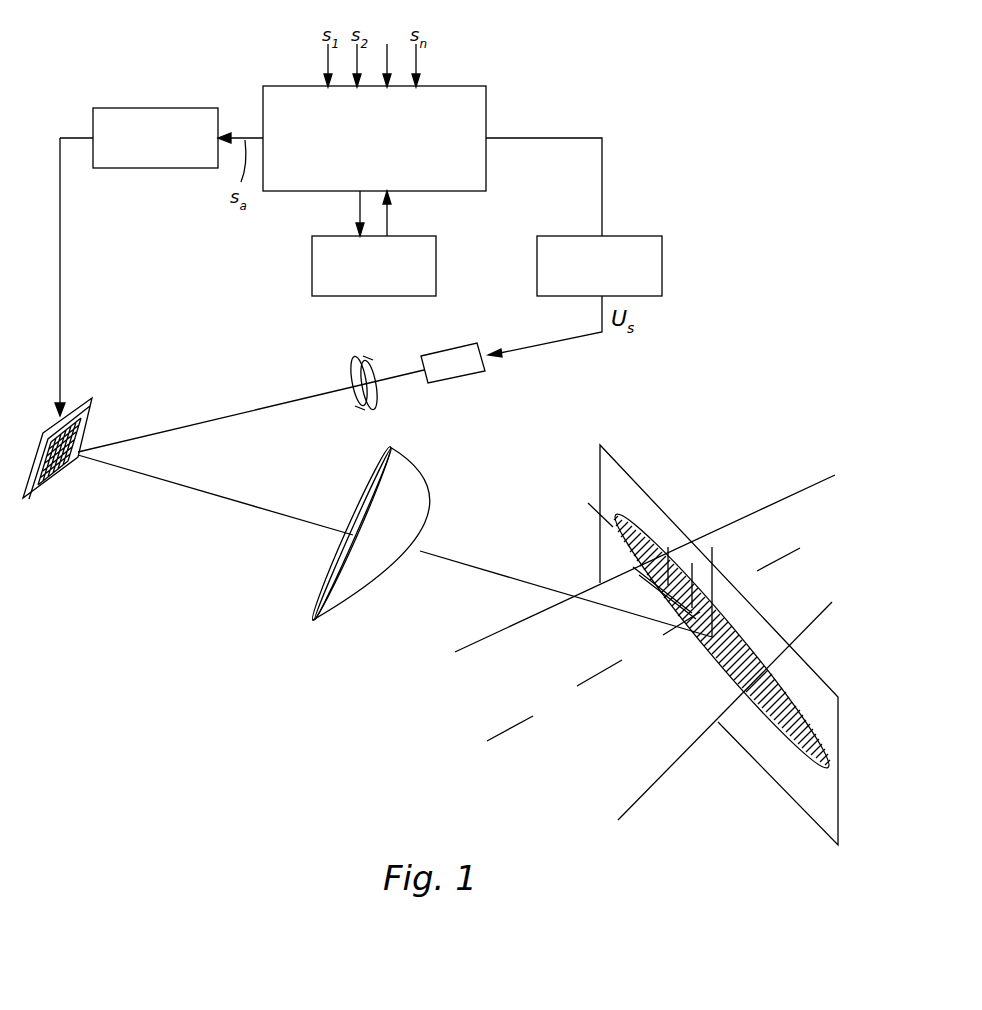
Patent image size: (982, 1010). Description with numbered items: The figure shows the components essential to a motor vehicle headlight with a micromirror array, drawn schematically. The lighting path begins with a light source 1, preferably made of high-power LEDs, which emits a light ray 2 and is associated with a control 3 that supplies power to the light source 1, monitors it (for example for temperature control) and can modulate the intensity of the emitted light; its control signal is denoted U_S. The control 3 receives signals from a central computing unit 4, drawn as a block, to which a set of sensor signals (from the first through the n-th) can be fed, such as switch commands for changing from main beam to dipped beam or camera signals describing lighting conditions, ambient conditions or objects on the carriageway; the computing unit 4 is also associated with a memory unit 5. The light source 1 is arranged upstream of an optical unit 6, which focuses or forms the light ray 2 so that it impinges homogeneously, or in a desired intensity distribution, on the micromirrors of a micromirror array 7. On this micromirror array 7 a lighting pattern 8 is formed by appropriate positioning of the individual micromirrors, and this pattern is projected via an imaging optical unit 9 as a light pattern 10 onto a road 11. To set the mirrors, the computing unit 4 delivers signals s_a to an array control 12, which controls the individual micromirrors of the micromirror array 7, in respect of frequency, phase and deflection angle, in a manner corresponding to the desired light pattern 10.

The light source 1 is at (460, 365).
The light ray 2 is at (312, 398).
The control 3 is at (599, 266).
The central computing unit 4 is at (374, 138).
The memory unit 5 is at (374, 266).
The optical unit 6 is at (372, 393).
The micromirror array 7 is at (40, 487).
The lighting pattern 8 is at (65, 462).
The imaging optical unit 9 is at (358, 585).
The light pattern 10 is at (755, 712).
The road 11 is at (626, 752).
The array control 12 is at (155, 138).